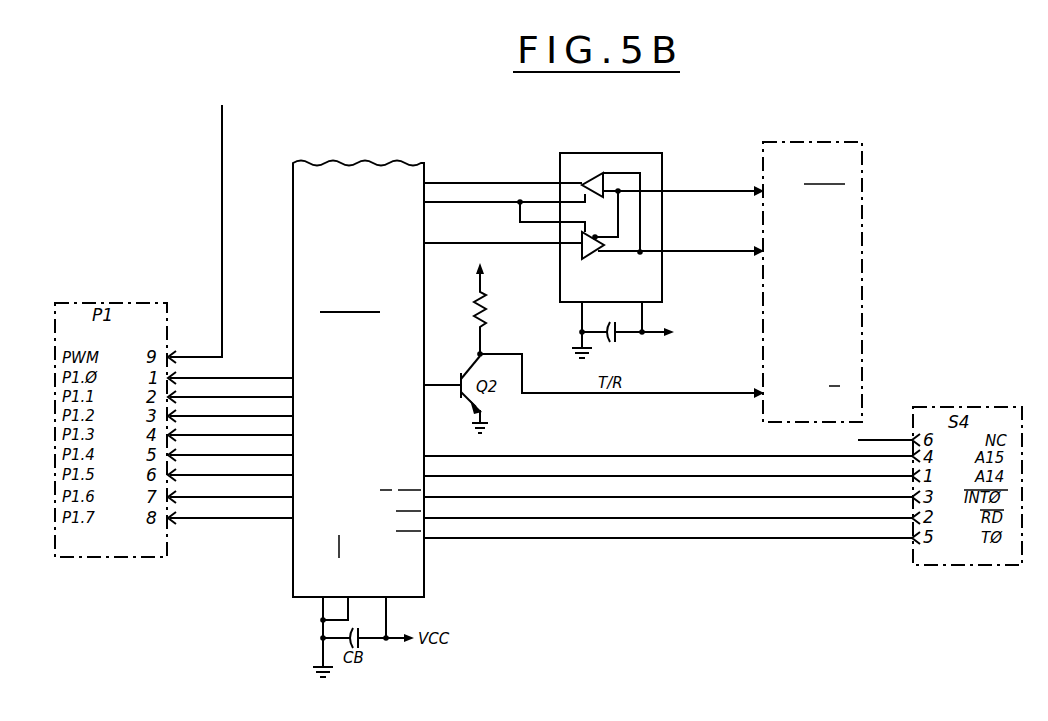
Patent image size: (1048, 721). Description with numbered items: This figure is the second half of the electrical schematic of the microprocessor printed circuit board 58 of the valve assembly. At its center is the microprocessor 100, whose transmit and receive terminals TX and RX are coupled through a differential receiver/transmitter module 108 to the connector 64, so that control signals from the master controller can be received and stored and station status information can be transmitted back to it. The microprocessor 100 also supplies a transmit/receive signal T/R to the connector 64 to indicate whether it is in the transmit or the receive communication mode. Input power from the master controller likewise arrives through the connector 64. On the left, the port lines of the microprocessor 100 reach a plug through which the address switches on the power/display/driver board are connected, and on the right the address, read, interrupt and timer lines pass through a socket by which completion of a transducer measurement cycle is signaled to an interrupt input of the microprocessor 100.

The microprocessor 100 is at (358, 170).
The differential receiver/transmitter module 108 is at (627, 158).
The microprocessor printed circuit board 58 is at (833, 101).
The connector 64 is at (866, 158).